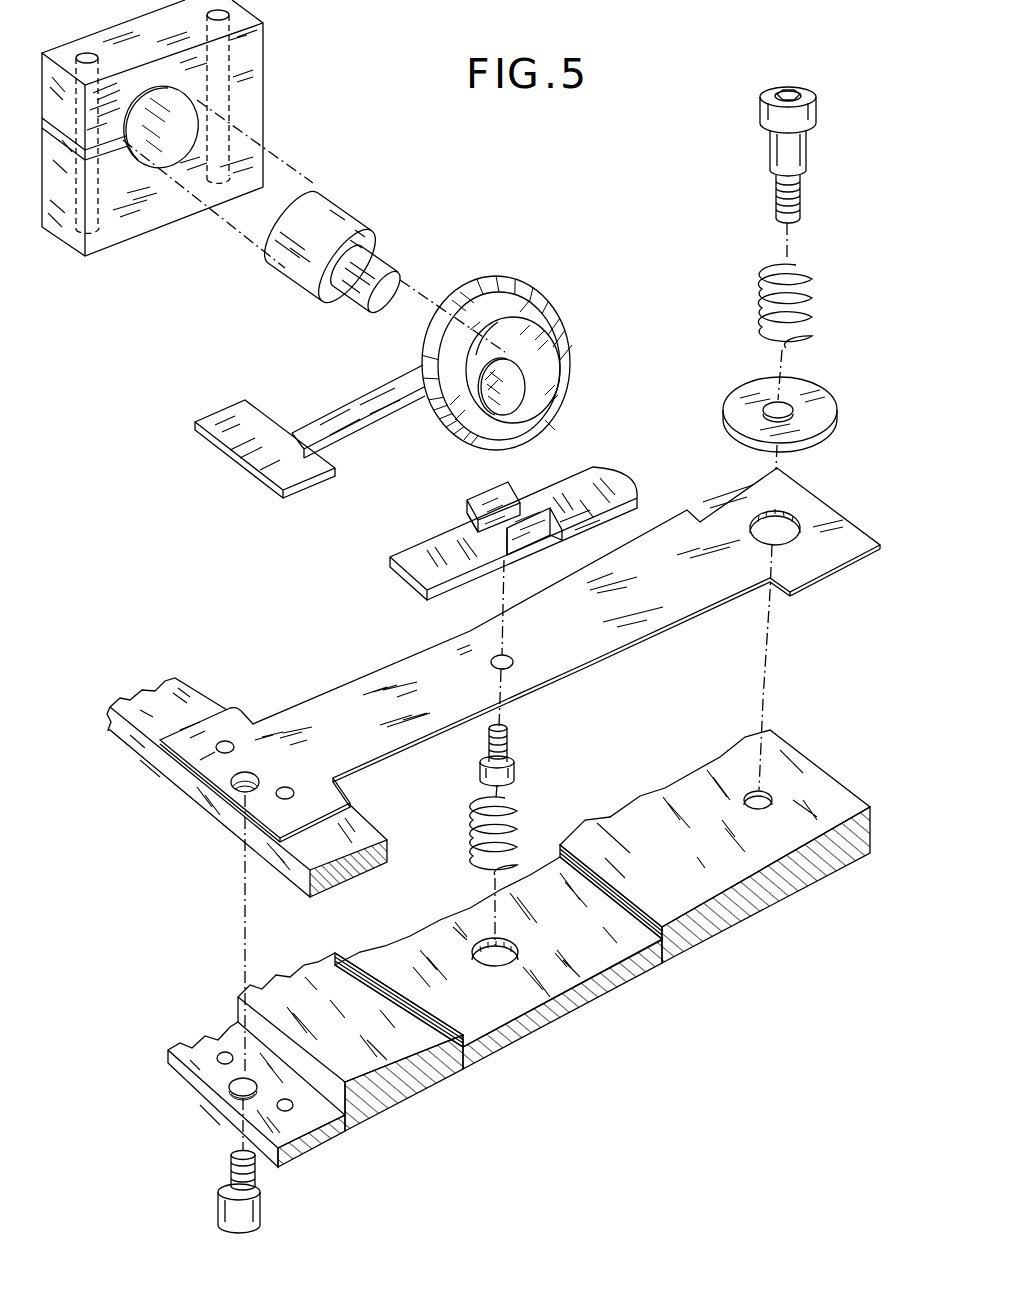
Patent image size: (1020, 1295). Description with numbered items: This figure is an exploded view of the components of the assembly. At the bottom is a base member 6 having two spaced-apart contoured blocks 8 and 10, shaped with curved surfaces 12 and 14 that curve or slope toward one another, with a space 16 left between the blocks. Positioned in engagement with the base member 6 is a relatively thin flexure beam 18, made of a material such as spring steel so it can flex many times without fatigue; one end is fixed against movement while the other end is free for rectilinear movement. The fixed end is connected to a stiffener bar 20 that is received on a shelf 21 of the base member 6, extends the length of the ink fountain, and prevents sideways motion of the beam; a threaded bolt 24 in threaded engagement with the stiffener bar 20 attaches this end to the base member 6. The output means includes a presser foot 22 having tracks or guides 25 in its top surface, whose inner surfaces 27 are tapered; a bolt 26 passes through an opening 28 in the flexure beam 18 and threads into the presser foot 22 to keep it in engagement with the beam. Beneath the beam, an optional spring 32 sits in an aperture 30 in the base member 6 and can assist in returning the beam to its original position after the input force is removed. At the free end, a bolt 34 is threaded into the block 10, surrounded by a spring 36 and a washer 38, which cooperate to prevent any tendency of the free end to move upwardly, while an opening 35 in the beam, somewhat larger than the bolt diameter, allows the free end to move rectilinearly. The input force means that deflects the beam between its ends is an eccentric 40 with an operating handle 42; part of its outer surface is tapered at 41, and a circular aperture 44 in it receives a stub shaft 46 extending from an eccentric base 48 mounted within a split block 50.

The base member 6 is at (585, 1008).
The contoured block 8 is at (390, 1080).
The contoured block 10 is at (496, 948).
The curved surface 12 is at (366, 1022).
The curved surface 14 is at (668, 872).
The space 16 is at (498, 952).
The flexure beam 18 is at (673, 628).
The stiffener bar 20 is at (147, 698).
The shelf 21 is at (210, 1073).
The presser foot 22 is at (400, 583).
The threaded bolt 24 is at (218, 1192).
The tracks or guides 25 is at (480, 488).
The bolt 26 is at (507, 753).
The inner surfaces 27 is at (497, 537).
The opening 28 is at (508, 657).
The aperture 30 is at (490, 970).
The spring 32 is at (477, 812).
The bolt 34 is at (773, 147).
The opening 35 is at (790, 537).
The spring 36 is at (762, 300).
The washer 38 is at (733, 410).
The eccentric 40 is at (531, 342).
The tapered outer surface 41 is at (563, 360).
The operating handle 42 is at (260, 457).
The circular aperture 44 is at (506, 390).
The stub shaft 46 is at (352, 287).
The eccentric base 48 is at (327, 218).
The split block 50 is at (247, 97).